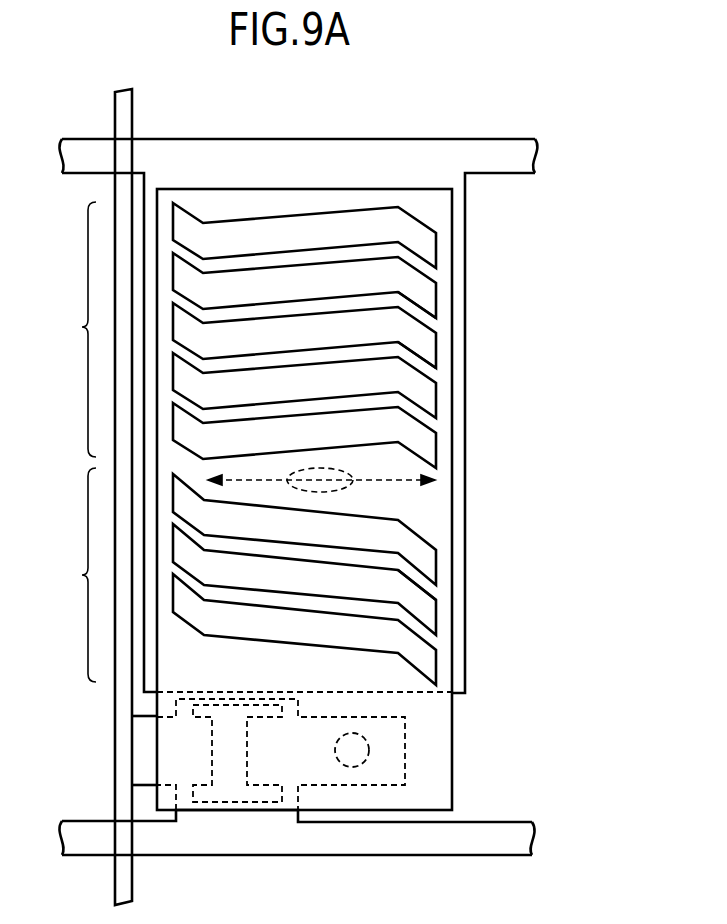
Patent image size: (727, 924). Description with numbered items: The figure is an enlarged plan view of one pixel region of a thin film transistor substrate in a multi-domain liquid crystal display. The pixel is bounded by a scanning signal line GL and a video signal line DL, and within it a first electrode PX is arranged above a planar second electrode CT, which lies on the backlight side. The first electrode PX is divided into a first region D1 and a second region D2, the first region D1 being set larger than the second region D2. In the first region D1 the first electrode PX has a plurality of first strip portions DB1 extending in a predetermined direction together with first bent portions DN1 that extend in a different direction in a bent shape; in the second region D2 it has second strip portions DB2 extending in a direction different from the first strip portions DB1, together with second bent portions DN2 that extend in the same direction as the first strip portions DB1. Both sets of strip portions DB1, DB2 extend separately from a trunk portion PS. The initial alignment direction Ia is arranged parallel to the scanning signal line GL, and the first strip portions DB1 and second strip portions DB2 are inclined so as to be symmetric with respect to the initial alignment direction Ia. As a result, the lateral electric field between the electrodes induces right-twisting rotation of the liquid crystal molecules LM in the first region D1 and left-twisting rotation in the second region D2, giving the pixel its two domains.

The second electrode CT is at (384, 153).
The video signal line DL is at (122, 745).
The scanning signal line GL is at (350, 843).
The trunk portion PS is at (165, 205).
The first electrode PX is at (458, 736).
The first strip portions DB1 is at (287, 308).
The second strip portions DB2 is at (310, 602).
The first bent portions DN1 is at (421, 266).
The second bent portions DN2 is at (417, 580).
The liquid crystal molecules LM is at (342, 470).
The initial alignment direction Ia is at (386, 482).
The first region D1 is at (72, 329).
The second region D2 is at (72, 575).